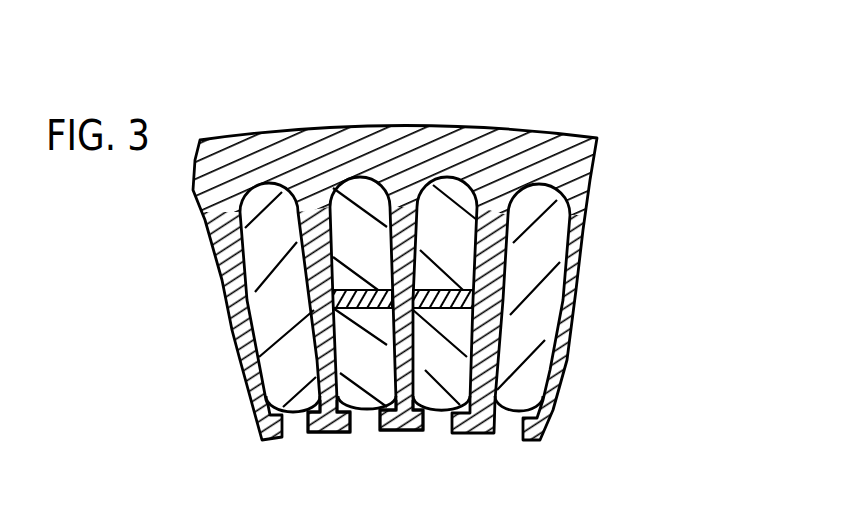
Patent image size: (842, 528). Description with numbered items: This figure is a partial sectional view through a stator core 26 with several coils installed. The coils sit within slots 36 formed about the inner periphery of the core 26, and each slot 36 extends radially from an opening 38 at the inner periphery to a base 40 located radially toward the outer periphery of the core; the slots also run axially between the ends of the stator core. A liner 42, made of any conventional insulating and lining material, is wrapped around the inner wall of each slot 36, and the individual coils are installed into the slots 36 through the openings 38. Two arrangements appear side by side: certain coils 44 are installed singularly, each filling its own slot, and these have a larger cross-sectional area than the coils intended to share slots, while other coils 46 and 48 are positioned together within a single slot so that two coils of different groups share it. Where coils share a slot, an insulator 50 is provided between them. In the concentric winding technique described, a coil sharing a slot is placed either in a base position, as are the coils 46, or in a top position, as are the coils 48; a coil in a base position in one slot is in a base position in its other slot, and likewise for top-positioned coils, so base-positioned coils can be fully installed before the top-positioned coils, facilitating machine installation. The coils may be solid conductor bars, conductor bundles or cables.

The stator core 26 is at (497, 147).
The slots 36 is at (262, 188).
The opening 38 is at (297, 428).
The base 40 is at (340, 173).
The liner 42 is at (367, 177).
The coils 44 is at (263, 258).
The coils 46 is at (437, 178).
The coils 48 is at (357, 393).
The insulator 50 is at (387, 344).